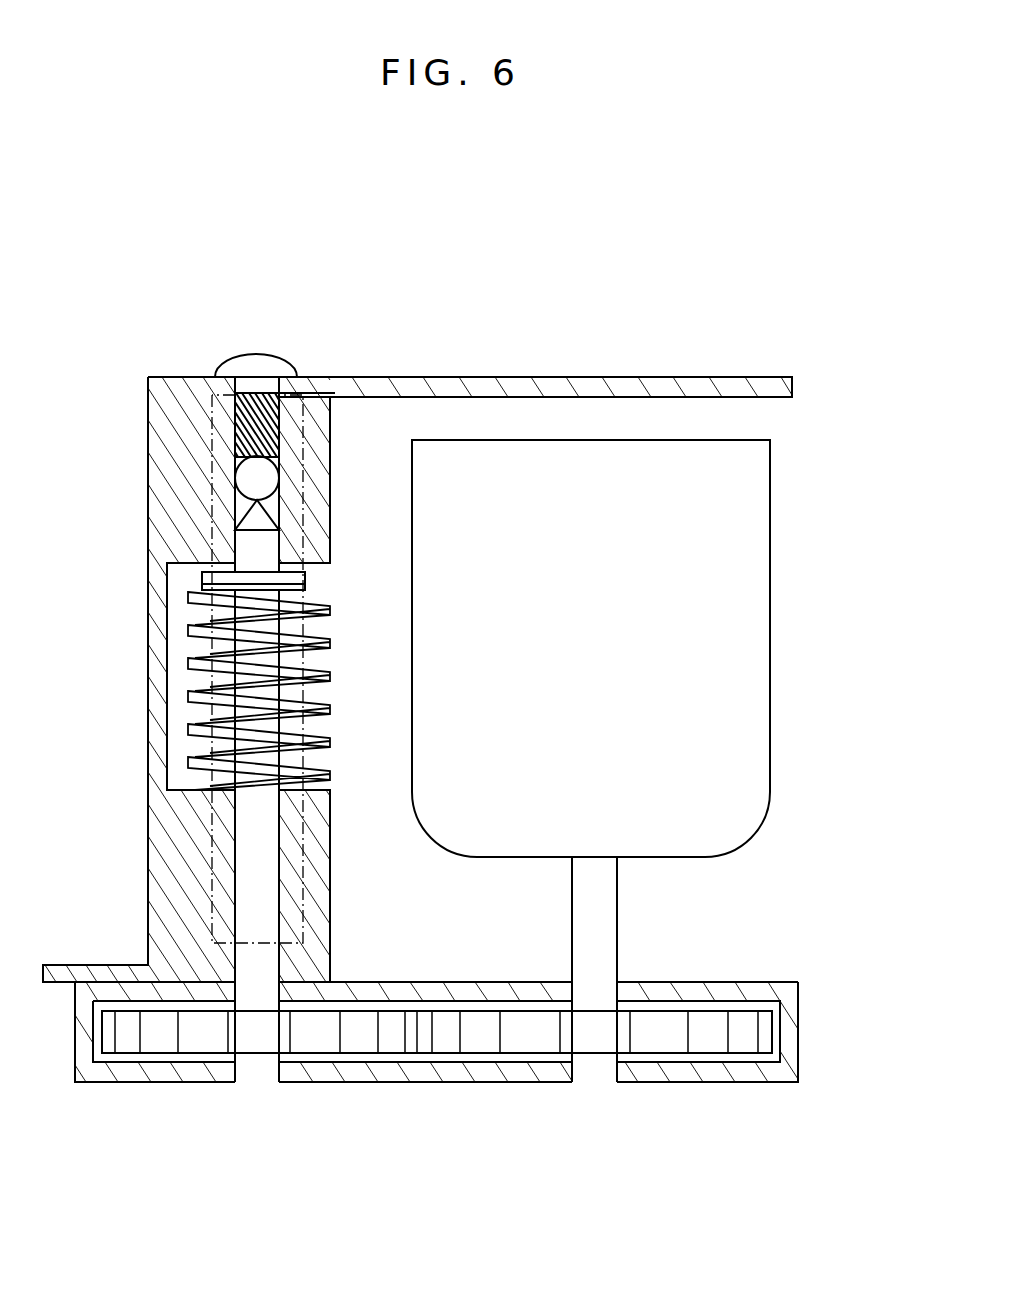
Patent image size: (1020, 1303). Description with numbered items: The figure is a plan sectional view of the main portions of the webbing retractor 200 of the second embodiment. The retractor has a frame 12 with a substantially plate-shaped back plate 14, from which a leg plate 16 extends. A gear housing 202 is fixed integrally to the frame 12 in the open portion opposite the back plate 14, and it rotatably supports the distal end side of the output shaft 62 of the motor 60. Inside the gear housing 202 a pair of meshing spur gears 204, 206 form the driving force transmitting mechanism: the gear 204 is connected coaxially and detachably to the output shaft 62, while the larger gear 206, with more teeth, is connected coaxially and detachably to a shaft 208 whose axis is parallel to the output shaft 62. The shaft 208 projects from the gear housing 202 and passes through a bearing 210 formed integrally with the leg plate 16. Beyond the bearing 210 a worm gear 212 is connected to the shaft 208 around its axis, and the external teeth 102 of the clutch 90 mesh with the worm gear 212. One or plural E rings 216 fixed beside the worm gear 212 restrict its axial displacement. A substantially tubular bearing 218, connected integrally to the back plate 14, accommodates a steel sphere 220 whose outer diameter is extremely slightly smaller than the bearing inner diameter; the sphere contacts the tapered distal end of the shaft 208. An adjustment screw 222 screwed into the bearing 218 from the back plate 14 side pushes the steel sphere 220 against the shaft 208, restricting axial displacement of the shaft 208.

The webbing retractor 200 is at (462, 277).
The frame 12 is at (684, 366).
The back plate 14 is at (578, 378).
The leg plate 16 is at (148, 640).
The motor 60 is at (738, 603).
The output shaft 62 is at (610, 900).
The external teeth 102 is at (303, 834).
The clutch 90 is at (257, 836).
The gear housing 202 is at (798, 1060).
The gear 204 is at (798, 1000).
The gear 206 is at (362, 1043).
The shaft 208 is at (265, 1067).
The bearing 210 is at (330, 935).
The worm gear 212 is at (328, 707).
The E ring 216 is at (305, 573).
The bearing 218 is at (328, 518).
The steel sphere 220 is at (260, 482).
The adjustment screw 222 is at (270, 420).